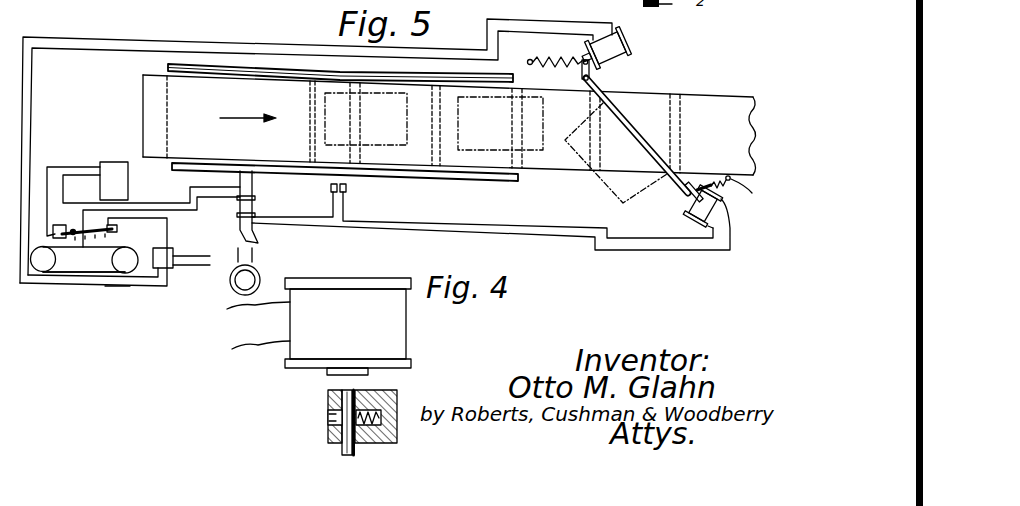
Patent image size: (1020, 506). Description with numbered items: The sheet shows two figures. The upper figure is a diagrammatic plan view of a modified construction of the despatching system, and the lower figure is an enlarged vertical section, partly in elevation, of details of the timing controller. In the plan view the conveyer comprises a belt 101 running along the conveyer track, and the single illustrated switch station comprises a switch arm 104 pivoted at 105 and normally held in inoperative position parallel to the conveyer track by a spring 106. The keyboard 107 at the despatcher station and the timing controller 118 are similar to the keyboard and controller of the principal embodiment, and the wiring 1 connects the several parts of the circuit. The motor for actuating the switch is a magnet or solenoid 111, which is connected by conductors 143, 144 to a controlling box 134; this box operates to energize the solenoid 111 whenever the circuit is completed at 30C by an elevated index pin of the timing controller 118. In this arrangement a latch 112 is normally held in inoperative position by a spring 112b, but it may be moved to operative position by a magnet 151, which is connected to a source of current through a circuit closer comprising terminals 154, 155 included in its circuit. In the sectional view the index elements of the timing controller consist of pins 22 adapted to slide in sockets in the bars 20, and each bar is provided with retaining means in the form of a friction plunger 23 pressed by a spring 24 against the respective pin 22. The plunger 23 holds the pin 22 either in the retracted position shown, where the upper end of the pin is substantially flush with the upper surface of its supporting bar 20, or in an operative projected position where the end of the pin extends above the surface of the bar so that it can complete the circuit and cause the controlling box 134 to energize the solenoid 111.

In FIG. 5, the electric circuit wiring 1 is at (33, 115).
In FIG. 5, the belt 101 is at (237, 97).
In FIG. 5, the switch arm 104 is at (667, 103).
In FIG. 5, the pivot 105 is at (598, 72).
In FIG. 5, the spring 106 is at (552, 52).
In FIG. 5, the keyboard 107 is at (117, 163).
In FIG. 5, the magnet or solenoid 111 is at (628, 43).
In FIG. 5, the latch 112 is at (690, 198).
In FIG. 5, the spring 112b is at (751, 191).
In FIG. 5, the magnet 151 is at (726, 226).
In FIG. 5, the terminal 154 is at (328, 190).
In FIG. 5, the terminal 155 is at (347, 190).
In FIG. 5, the circuit contact 30C is at (114, 230).
In FIG. 5, the controlling box 134 is at (166, 261).
In FIG. 5, the timing controller 118 is at (67, 265).
In FIG. 5, the conductor 143 is at (80, 285).
In FIG. 5, the conductor 144 is at (115, 280).
In FIG. 4, the bar 20 is at (397, 437).
In FIG. 4, the pin 22 is at (342, 447).
In FIG. 4, the friction plunger 23 is at (358, 410).
In FIG. 4, the spring 24 is at (362, 443).